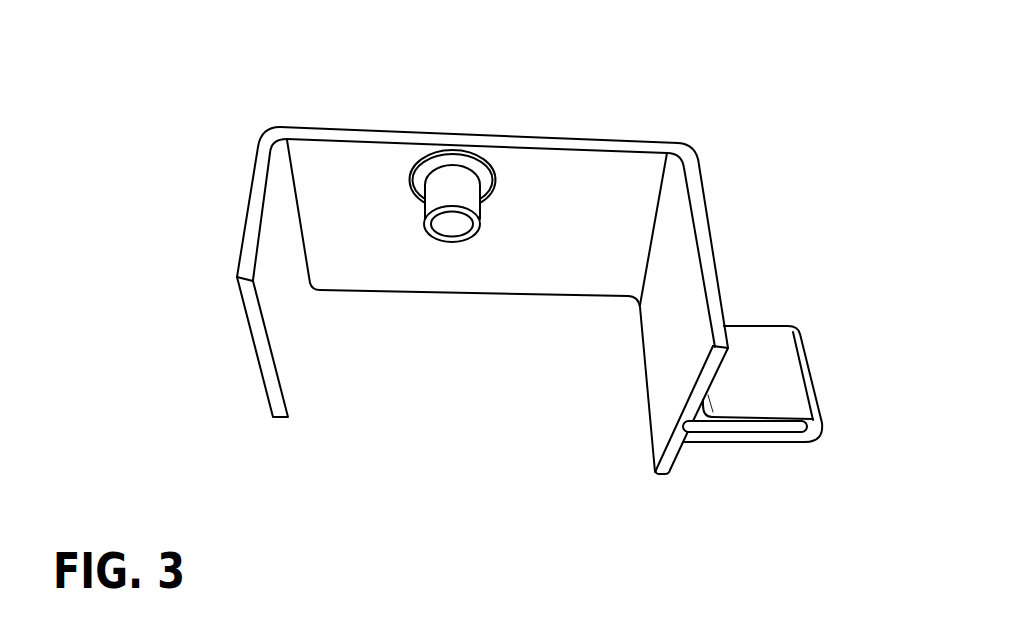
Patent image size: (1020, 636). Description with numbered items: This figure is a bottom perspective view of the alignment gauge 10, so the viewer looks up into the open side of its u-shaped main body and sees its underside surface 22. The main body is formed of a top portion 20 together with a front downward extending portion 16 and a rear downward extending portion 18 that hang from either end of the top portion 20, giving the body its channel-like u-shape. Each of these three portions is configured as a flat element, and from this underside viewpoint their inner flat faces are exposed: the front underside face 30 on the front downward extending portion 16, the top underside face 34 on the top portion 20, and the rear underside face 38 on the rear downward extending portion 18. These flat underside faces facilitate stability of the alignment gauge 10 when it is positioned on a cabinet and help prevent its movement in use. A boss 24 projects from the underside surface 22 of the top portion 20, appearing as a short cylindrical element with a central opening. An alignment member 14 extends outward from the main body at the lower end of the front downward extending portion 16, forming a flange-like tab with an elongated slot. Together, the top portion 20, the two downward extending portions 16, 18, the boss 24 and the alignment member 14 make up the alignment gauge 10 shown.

The alignment gauge 10 is at (672, 117).
The alignment member 14 is at (782, 375).
The front downward extending portion 16 is at (702, 236).
The rear downward extending portion 18 is at (255, 222).
The top portion 20 is at (558, 142).
The underside surface 22 is at (335, 393).
The boss 24 is at (455, 180).
The front underside face 30 is at (691, 334).
The top underside face 34 is at (572, 220).
The rear underside face 38 is at (287, 295).